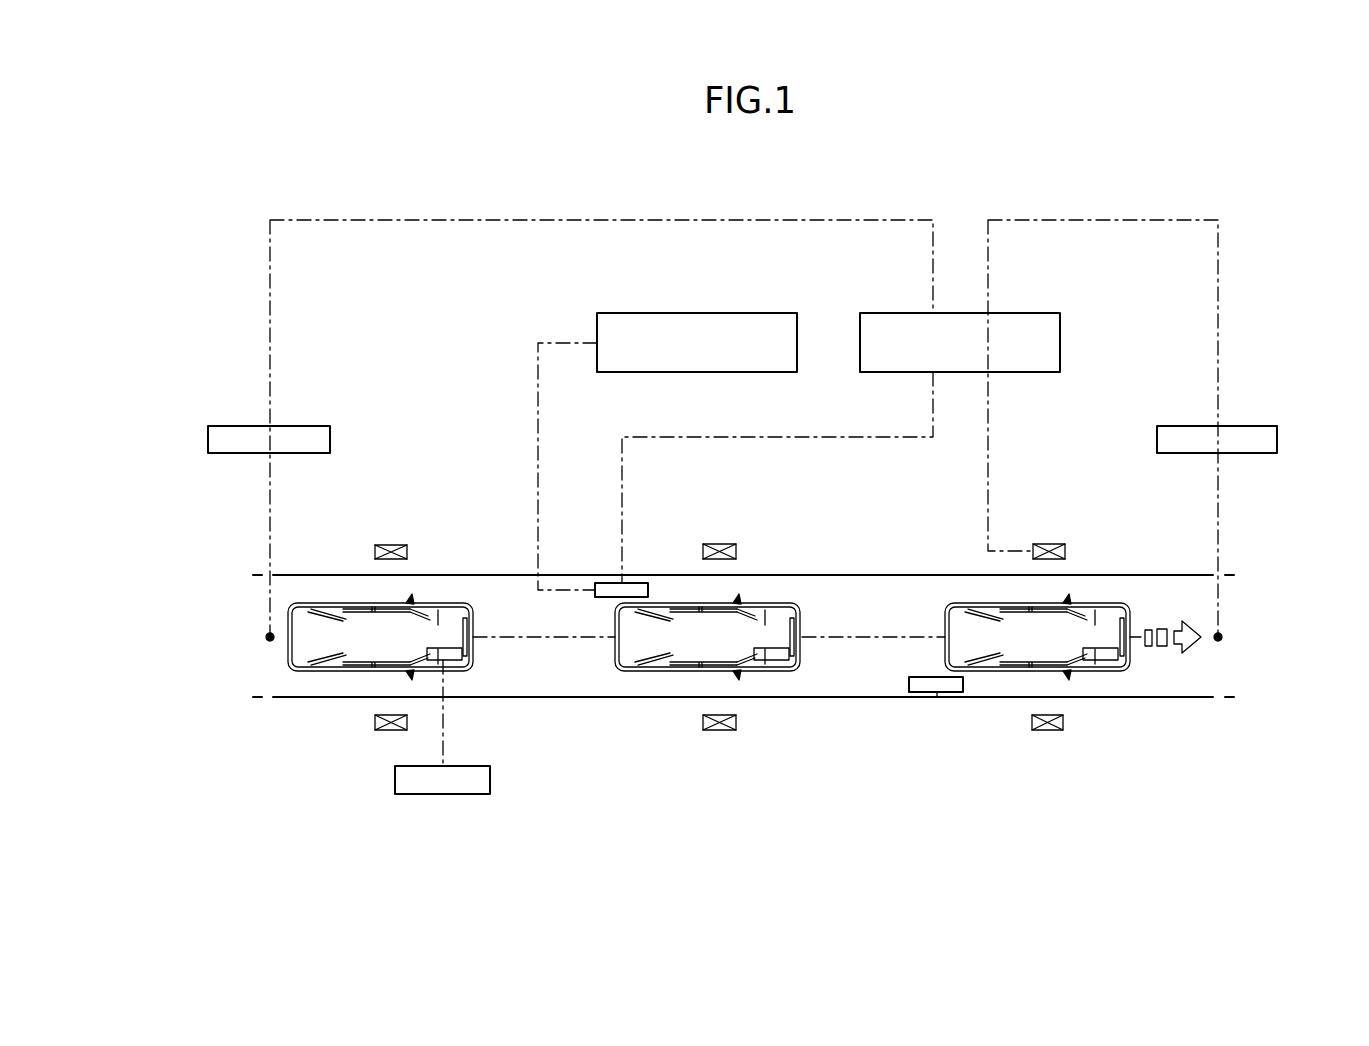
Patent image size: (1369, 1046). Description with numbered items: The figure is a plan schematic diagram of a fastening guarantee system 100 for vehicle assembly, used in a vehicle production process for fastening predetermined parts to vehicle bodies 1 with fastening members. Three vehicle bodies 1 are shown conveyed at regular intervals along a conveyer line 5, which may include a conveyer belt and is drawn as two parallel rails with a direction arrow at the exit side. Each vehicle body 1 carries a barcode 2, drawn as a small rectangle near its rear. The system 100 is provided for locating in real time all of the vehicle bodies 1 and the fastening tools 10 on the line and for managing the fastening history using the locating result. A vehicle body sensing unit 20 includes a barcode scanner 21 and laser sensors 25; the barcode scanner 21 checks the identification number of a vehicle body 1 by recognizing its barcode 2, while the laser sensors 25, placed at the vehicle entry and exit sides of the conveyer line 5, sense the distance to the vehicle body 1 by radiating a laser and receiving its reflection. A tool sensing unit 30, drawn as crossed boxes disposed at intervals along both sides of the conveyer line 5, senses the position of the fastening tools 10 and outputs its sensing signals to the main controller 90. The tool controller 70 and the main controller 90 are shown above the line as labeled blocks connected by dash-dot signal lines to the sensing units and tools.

The fastening guarantee system 100 is at (725, 177).
The vehicle body 1 is at (768, 604).
The barcode 2 is at (443, 648).
The conveyer line 5 is at (848, 698).
The fastening tool 10 is at (605, 597).
The vehicle body sensing unit 20 is at (180, 705).
The barcode scanner 21 is at (395, 779).
The laser sensor 25 is at (1277, 441).
The tool sensing unit 30 is at (391, 545).
The tool controller 70 is at (697, 313).
The main controller 90 is at (1060, 343).